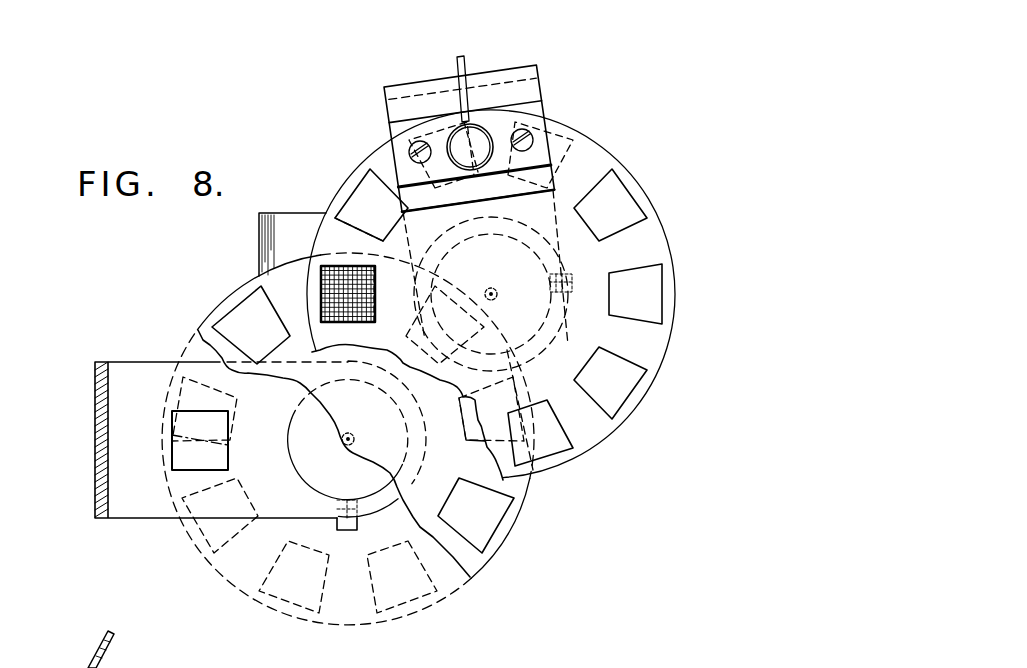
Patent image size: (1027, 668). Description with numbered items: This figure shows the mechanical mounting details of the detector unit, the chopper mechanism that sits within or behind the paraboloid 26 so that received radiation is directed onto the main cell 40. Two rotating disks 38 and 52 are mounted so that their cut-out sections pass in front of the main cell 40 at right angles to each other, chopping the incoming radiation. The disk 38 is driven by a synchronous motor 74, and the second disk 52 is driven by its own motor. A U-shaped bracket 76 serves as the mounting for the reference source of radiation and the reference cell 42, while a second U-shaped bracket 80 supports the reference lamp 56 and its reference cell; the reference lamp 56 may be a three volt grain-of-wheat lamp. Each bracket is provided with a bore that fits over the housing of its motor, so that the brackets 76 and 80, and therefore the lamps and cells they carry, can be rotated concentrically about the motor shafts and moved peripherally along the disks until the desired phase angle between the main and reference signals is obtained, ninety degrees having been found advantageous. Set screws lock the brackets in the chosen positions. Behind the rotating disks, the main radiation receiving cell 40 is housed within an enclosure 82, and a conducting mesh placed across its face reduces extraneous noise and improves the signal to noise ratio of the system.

The paraboloid 26 is at (80, 667).
The rotating disk 38 is at (520, 517).
The main cell 40 is at (340, 277).
The reference cell 42 is at (172, 452).
The rotating disk 52 is at (612, 432).
The reference lamp 56 is at (482, 126).
The synchronous motor 74 is at (318, 483).
The U-shaped bracket 76 is at (95, 493).
The U-shaped bracket 80 is at (493, 75).
The enclosure 82 is at (259, 256).